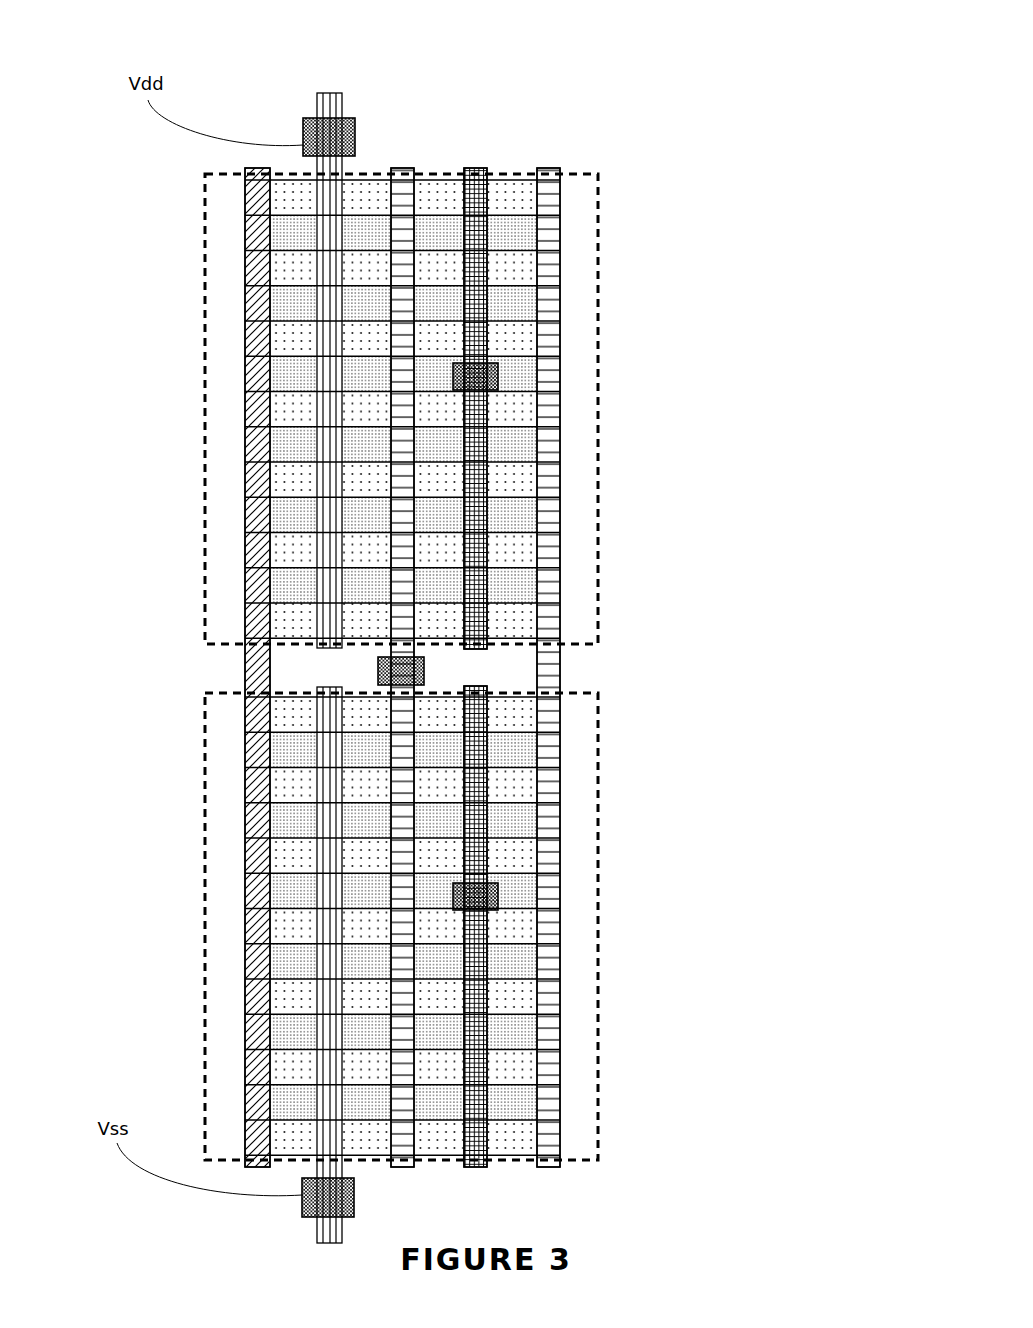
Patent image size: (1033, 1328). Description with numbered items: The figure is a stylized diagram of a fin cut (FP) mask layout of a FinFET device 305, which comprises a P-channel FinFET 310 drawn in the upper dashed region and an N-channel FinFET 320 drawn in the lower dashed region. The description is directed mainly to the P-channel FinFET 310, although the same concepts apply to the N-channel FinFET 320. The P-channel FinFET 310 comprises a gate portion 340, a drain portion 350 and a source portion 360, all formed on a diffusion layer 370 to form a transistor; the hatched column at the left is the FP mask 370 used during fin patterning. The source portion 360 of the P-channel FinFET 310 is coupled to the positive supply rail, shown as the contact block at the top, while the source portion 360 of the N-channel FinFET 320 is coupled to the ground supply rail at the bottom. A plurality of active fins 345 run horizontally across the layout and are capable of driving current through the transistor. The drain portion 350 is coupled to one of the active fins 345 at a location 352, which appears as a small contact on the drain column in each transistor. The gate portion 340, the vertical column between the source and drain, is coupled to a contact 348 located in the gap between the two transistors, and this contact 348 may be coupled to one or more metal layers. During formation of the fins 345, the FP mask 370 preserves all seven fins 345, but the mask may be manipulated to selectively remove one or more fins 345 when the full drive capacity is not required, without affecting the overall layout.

The FinFET device 305 is at (792, 42).
The P-channel FinFET 310 is at (170, 454).
The N-channel FinFET 320 is at (175, 951).
The gate portion 340 is at (405, 168).
The active fins 345 is at (530, 340).
The contact 348 is at (424, 667).
The drain portion 350 is at (477, 168).
The location 352 is at (563, 378).
The source portion 360 is at (330, 92).
The diffusion layer / FP mask 370 is at (703, 516).